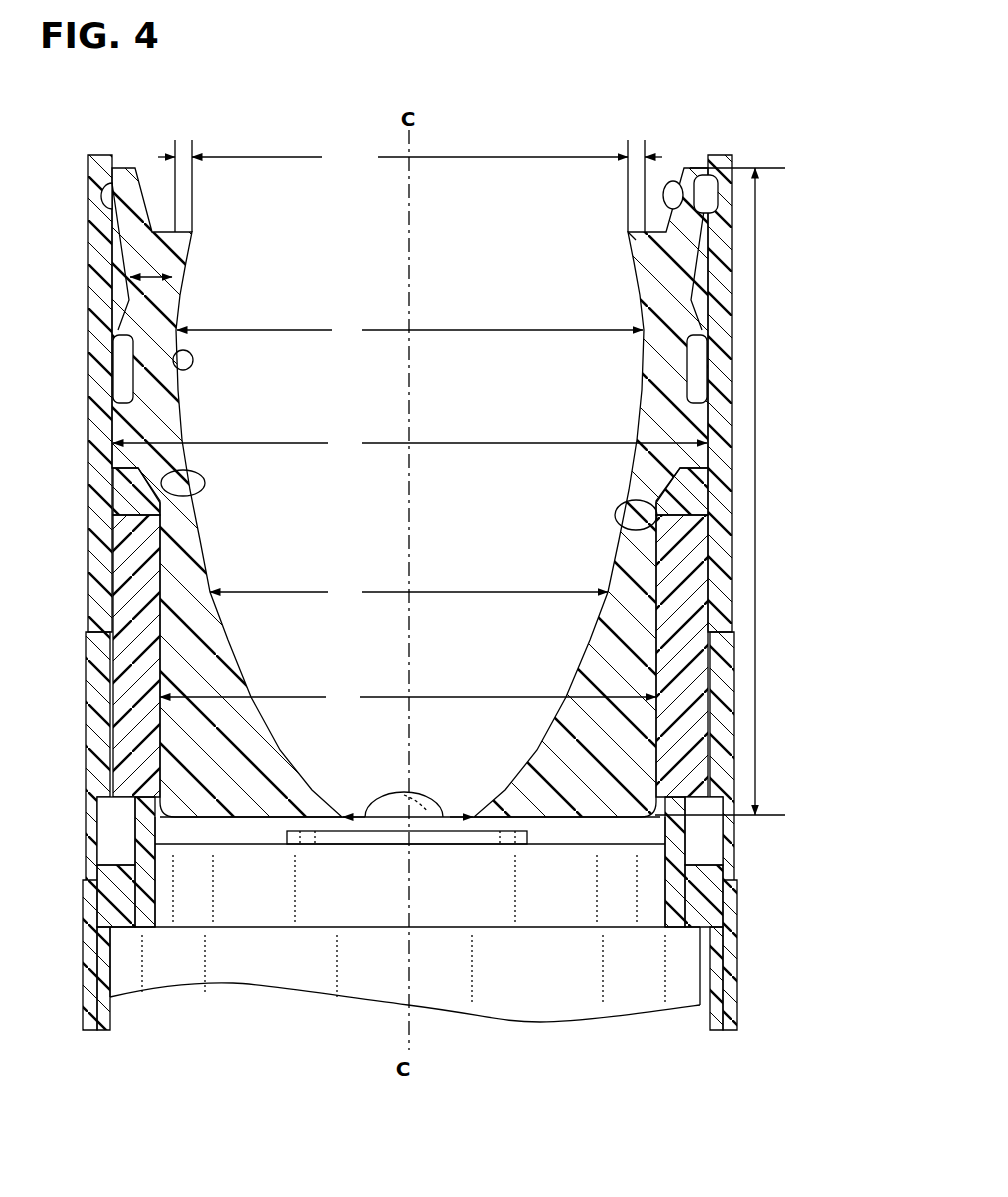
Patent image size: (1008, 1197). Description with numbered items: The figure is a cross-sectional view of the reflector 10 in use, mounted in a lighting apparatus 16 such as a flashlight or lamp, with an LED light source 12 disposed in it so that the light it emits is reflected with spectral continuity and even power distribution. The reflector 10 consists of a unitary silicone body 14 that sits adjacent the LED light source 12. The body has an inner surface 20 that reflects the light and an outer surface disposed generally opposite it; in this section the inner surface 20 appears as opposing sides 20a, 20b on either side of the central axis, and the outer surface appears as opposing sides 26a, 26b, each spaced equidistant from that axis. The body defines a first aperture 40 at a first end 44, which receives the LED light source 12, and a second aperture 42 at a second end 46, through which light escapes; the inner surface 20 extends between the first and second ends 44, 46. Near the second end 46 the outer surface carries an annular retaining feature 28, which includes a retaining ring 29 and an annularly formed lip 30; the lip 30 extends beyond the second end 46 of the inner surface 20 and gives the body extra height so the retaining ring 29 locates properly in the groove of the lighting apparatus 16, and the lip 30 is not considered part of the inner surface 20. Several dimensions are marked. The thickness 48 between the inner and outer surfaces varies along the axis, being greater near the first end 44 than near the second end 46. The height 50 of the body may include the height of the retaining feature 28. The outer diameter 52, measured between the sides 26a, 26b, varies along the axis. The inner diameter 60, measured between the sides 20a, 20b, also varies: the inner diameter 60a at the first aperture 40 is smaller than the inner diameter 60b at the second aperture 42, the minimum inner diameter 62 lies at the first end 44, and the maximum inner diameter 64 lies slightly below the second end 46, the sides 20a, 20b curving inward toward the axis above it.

The reflector 10 is at (803, 156).
The LED light source 12 is at (418, 822).
The unitary silicone body 14 is at (200, 668).
The lighting apparatus 16 is at (95, 300).
The inner surface 20 is at (125, 357).
The opposing side of inner surface 20a is at (137, 492).
The opposing side of inner surface 20b is at (657, 515).
The opposing side of outer surface 26a is at (660, 615).
The opposing side of outer surface 26b is at (155, 612).
The retaining feature 28 is at (120, 222).
The retaining ring 29 is at (700, 192).
The lip 30 is at (706, 220).
The first aperture 40 is at (355, 822).
The second aperture 42 is at (219, 228).
The first end 44 is at (473, 822).
The second end 46 is at (636, 233).
The thickness 48 is at (127, 272).
The height 50 is at (757, 475).
The outer diameter 52 is at (410, 570).
The inner diameter 60 is at (409, 592).
The inner diameter at first aperture 60a is at (390, 775).
The inner diameter at second aperture 60b is at (410, 157).
The minimum inner diameter 62 is at (385, 802).
The maximum inner diameter 64 is at (410, 330).